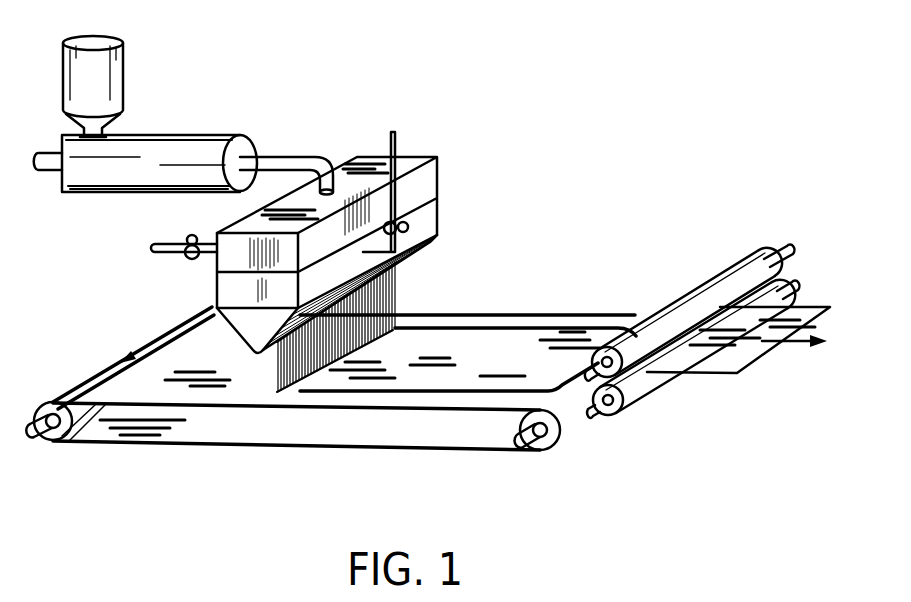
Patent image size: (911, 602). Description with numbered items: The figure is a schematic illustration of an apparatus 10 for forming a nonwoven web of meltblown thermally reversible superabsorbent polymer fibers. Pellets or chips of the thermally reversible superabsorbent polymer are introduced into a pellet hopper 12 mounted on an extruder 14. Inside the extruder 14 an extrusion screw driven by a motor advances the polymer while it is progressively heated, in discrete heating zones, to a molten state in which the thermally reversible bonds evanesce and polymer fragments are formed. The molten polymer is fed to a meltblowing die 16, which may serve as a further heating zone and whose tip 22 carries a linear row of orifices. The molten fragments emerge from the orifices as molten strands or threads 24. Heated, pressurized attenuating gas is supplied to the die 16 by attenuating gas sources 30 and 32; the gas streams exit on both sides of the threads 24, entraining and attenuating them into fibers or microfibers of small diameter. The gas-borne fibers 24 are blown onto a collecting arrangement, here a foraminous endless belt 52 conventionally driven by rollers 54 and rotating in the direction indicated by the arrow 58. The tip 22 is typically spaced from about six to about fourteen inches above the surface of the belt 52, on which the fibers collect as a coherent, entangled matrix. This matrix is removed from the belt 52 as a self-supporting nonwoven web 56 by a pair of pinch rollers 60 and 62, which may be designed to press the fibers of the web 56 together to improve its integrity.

The apparatus for forming a nonwoven web 10 is at (583, 135).
The pellet hopper 12 is at (77, 87).
The extruder 14 is at (200, 133).
The meltblowing die 16 is at (440, 178).
The tip 22 is at (262, 362).
The molten strands or threads 24 is at (412, 292).
The attenuating gas source 30 is at (397, 135).
The attenuating gas source 32 is at (172, 247).
The foraminous endless belt 52 is at (130, 354).
The rollers 54 is at (45, 403).
The self-supporting nonwoven web 56 is at (537, 335).
The arrow 58 is at (310, 467).
The pinch roller 60 is at (743, 270).
The pinch roller 62 is at (653, 392).